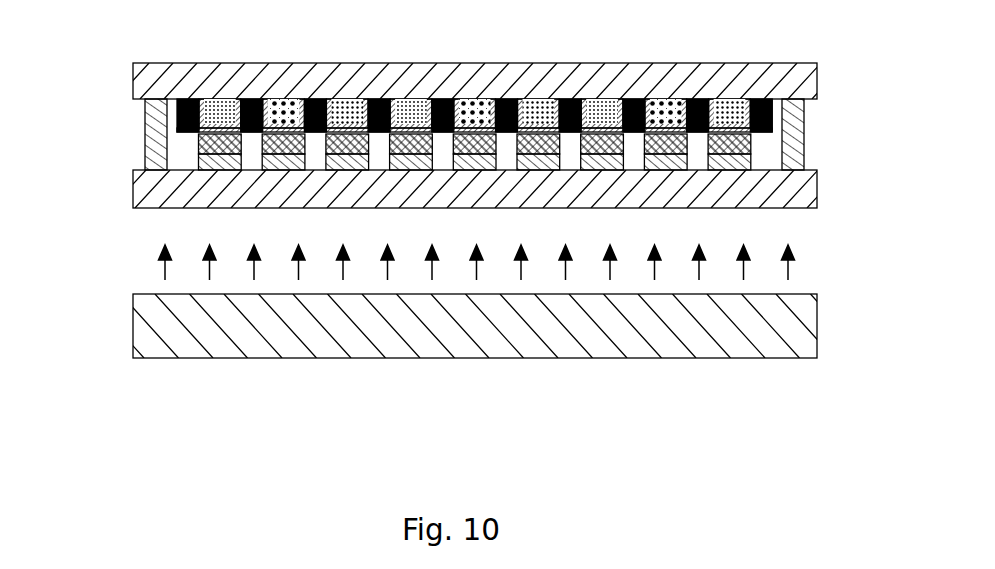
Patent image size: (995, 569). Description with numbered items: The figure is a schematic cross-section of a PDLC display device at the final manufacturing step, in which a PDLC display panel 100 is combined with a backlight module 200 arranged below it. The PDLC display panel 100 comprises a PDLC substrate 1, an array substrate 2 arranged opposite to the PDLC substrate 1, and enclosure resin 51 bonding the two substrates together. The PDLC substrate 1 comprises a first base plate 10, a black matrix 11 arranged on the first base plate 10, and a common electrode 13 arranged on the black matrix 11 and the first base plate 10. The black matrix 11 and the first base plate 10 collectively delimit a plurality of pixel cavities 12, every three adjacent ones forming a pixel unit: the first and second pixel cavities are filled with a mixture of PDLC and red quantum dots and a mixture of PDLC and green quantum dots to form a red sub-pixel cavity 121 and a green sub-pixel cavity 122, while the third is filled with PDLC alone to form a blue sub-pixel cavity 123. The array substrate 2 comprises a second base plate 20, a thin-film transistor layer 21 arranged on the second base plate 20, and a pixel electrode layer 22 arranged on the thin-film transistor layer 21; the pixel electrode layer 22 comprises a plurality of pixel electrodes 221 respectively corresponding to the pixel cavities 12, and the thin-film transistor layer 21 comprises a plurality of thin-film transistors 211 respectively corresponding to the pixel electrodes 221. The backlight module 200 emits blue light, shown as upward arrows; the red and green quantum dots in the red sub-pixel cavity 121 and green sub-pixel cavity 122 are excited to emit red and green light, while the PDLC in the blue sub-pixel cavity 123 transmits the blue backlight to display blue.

The first base plate 10 is at (777, 82).
The black matrix 11 is at (700, 100).
The pixel cavities 12 is at (470, 67).
The red sub-pixel cavity 121 is at (215, 105).
The green sub-pixel cavity 122 is at (282, 105).
The blue sub-pixel cavity 123 is at (345, 105).
The common electrode 13 is at (652, 104).
The enclosure resin 51 is at (806, 108).
The second base plate 20 is at (800, 187).
The thin-film transistor layer 21 is at (533, 284).
The thin-film transistors 211 is at (222, 162).
The pixel electrode layer 22 is at (533, 269).
The pixel electrodes 221 is at (280, 146).
The PDLC display panel 100 is at (80, 90).
The PDLC substrate 1 is at (120, 63).
The array substrate 2 is at (120, 137).
The backlight module 200 is at (120, 293).